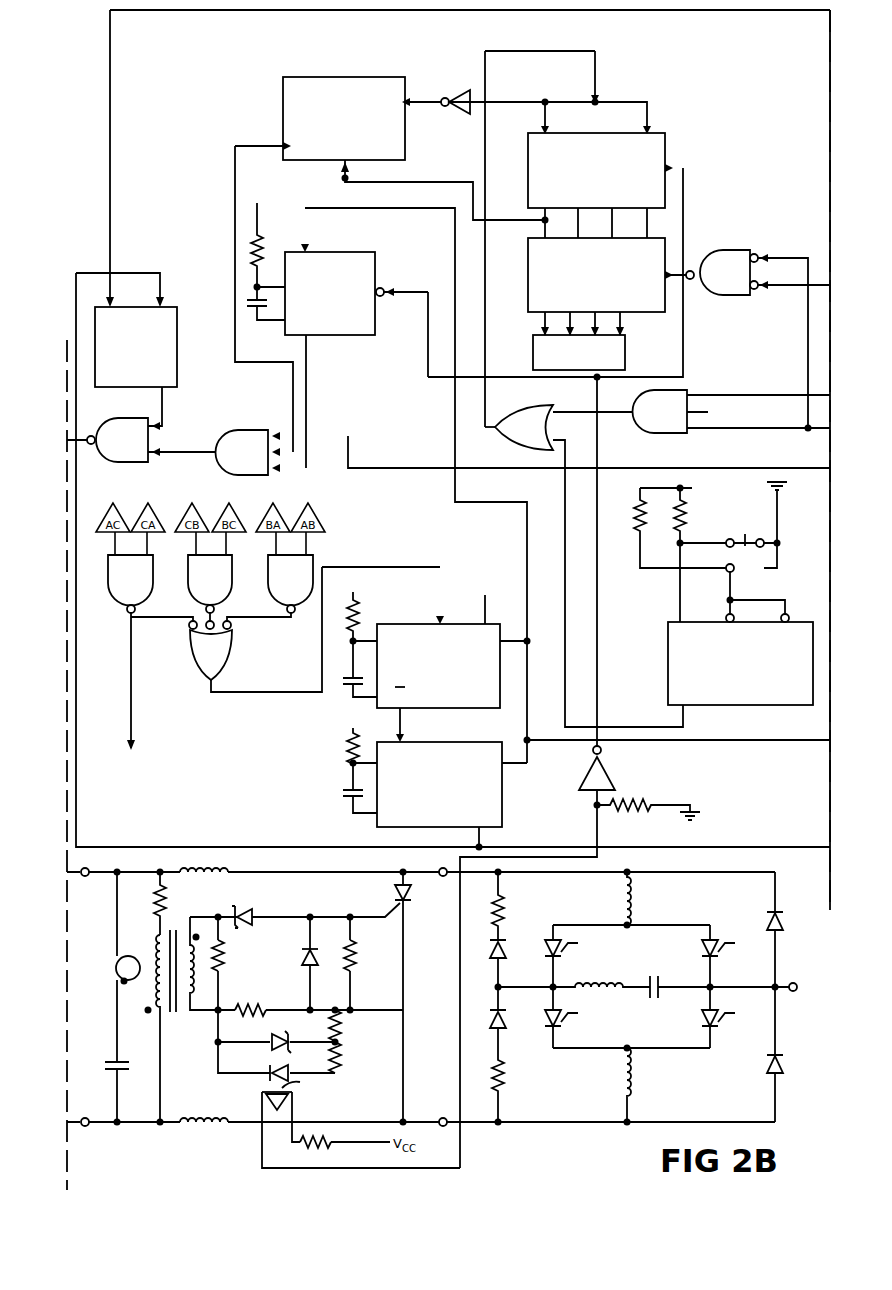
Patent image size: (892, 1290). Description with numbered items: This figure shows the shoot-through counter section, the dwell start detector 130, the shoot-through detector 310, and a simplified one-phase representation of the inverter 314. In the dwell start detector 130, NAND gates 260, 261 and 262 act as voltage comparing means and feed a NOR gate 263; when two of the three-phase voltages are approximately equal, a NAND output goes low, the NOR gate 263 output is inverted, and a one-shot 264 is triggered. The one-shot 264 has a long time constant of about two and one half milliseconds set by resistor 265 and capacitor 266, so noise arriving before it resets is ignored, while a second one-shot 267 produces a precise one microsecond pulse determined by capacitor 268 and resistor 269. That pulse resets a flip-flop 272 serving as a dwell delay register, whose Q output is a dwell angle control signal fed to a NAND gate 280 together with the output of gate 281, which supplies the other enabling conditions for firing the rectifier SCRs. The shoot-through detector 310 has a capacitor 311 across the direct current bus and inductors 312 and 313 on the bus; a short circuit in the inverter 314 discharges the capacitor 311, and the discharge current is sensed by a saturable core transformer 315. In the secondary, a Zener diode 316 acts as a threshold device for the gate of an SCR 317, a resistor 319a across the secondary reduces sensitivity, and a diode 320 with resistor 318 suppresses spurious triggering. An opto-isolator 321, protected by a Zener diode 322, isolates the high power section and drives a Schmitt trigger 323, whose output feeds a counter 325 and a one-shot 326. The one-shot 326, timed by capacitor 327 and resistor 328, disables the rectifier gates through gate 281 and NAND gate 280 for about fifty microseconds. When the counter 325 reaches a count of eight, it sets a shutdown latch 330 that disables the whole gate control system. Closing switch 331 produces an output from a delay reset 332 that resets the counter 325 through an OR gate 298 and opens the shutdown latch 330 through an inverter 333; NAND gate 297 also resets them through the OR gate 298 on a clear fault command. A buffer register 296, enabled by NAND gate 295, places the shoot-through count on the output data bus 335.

The dwell start detector 130 is at (247, 753).
The NAND gate 260 is at (152, 568).
The NAND gate 261 is at (232, 568).
The NAND gate 262 is at (312, 568).
The NOR gate 263 is at (222, 650).
The one-shot 264 is at (459, 622).
The resistor 265 is at (361, 618).
The capacitor 266 is at (346, 690).
The second one-shot 267 is at (458, 745).
The capacitor 268 is at (343, 793).
The resistor 269 is at (346, 747).
The flip-flop 272 is at (177, 345).
The NAND gate 280 is at (126, 419).
The NAND gate 281 is at (241, 430).
The NAND gate 295 is at (722, 251).
The buffer register 296 is at (528, 290).
The NAND gate 297 is at (665, 433).
The OR gate 298 is at (503, 440).
The shoot-through detector 310 is at (244, 1136).
The capacitor 311 is at (106, 1072).
The inductor 312 is at (203, 1118).
The inductor 313 is at (203, 880).
The inverter 314 is at (560, 1132).
The saturable core transformer 315 is at (196, 1043).
The Zener diode 316 is at (250, 909).
The SCR 317 is at (258, 997).
The resistor 318 is at (357, 960).
The resistor 319a is at (224, 952).
The diode 320 is at (307, 957).
The opto-isolator 321 is at (300, 1082).
The Zener diode 322 is at (286, 1036).
The Schmitt trigger 323 is at (618, 783).
The counter 325 is at (668, 167).
The one-shot 326 is at (352, 335).
The capacitor 327 is at (251, 315).
The resistor 328 is at (262, 250).
The shutdown latch 330 is at (342, 76).
The switch 331 is at (743, 538).
The delay reset 332 is at (668, 643).
The inverter 333 is at (447, 95).
The output data bus 335 is at (627, 345).